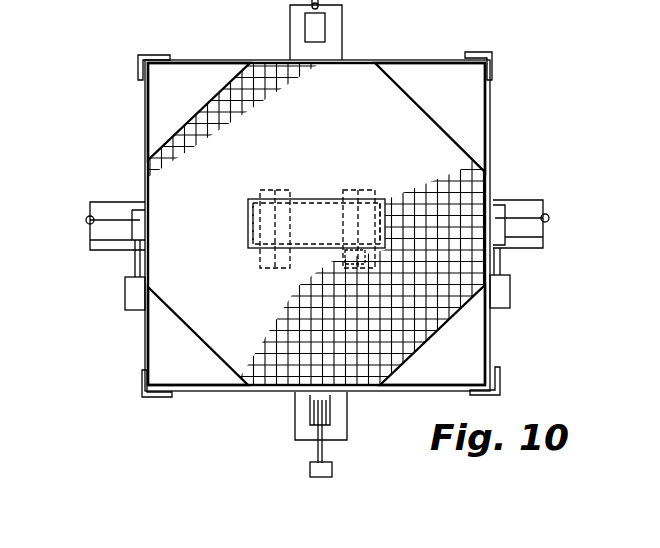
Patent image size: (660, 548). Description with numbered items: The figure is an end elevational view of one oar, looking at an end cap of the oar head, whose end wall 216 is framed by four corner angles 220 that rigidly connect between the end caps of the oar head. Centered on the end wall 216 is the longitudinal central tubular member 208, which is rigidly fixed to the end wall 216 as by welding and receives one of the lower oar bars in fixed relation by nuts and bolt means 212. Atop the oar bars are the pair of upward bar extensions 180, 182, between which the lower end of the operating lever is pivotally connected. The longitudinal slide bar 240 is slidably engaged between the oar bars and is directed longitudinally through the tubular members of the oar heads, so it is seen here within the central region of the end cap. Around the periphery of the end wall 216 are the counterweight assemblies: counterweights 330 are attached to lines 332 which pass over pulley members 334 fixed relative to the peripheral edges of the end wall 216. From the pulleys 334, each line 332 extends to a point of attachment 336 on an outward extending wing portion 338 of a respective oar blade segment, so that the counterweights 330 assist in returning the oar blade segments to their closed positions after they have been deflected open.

The upward bar extension 180 is at (377, 212).
The upward bar extension 182 is at (250, 228).
The central tubular member 208 is at (325, 206).
The nuts and bolt means 212 is at (285, 178).
The end wall 216 is at (349, 90).
The corner angles 220 is at (165, 48).
The longitudinal slide bar 240 is at (345, 190).
The counterweight 330 is at (508, 298).
The line 332 is at (500, 266).
The pulley member 334 is at (544, 238).
The point of attachment 336 is at (550, 218).
The wing portion 338 is at (530, 207).